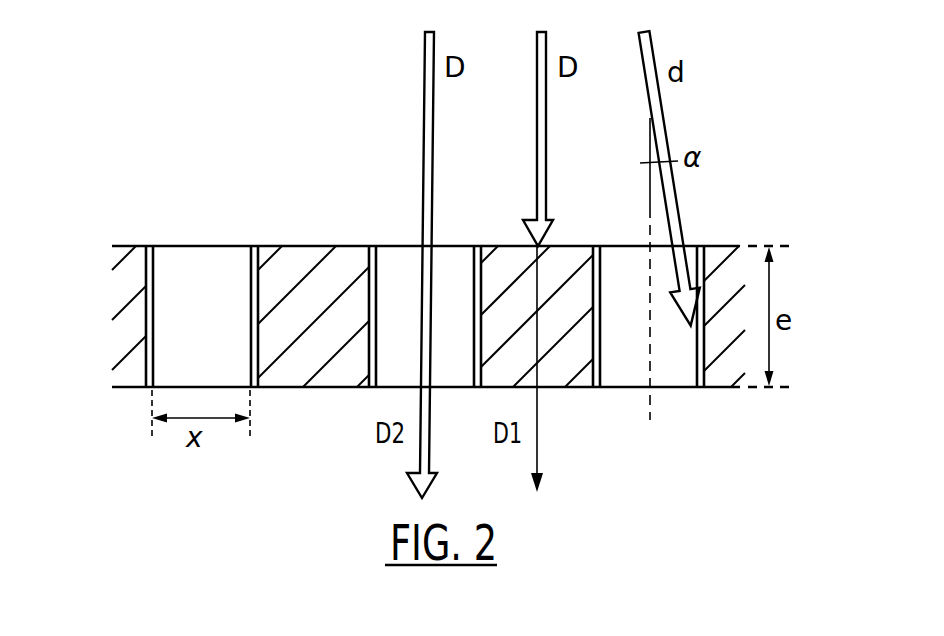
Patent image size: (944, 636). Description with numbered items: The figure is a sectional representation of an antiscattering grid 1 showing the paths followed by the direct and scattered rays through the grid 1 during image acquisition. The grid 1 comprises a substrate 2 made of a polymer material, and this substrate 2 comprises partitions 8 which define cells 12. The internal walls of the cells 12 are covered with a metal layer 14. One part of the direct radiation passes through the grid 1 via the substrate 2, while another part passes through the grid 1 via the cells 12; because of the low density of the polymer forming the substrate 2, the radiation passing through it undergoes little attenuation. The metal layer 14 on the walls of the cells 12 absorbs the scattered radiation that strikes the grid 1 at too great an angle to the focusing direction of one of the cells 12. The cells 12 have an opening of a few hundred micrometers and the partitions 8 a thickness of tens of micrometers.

The grid 1 is at (120, 305).
The substrate 2 is at (566, 272).
The partitions 8 is at (313, 250).
The cells 12 is at (462, 250).
The metal layer 14 is at (597, 392).